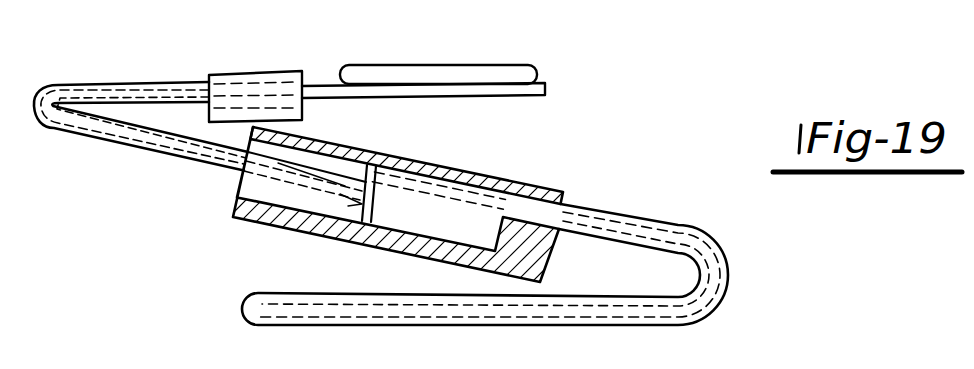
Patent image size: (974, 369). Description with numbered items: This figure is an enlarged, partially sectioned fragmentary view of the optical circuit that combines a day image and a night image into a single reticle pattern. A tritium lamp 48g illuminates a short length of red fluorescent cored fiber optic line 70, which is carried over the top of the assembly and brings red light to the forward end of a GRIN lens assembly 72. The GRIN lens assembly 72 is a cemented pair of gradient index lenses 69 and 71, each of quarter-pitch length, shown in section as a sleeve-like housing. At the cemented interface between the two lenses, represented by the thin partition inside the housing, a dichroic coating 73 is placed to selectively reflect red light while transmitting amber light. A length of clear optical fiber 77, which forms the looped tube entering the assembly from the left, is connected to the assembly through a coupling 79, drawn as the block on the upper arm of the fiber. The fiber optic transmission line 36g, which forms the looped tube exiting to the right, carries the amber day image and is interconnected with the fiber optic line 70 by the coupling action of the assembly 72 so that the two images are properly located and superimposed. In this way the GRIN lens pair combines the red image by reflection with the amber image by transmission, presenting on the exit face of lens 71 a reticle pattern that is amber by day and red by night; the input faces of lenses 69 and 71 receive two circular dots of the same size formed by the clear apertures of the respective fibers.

The clear optical fiber 77 is at (57, 84).
The coupling 79 is at (231, 74).
The red fluorescent cored fiber optic line 70 is at (467, 97).
The contact element 48g is at (435, 70).
The GRIN lens assembly 72 is at (466, 177).
The GRIN lens 71 is at (300, 162).
The dichroic coating 73 is at (357, 228).
The GRIN lens 69 is at (401, 197).
The tube 36g is at (619, 235).